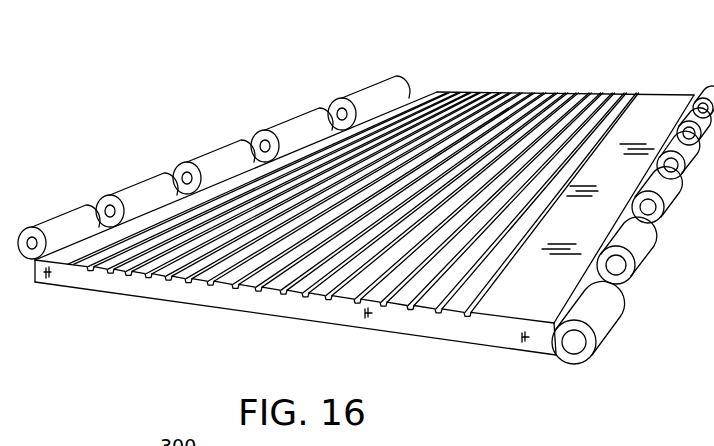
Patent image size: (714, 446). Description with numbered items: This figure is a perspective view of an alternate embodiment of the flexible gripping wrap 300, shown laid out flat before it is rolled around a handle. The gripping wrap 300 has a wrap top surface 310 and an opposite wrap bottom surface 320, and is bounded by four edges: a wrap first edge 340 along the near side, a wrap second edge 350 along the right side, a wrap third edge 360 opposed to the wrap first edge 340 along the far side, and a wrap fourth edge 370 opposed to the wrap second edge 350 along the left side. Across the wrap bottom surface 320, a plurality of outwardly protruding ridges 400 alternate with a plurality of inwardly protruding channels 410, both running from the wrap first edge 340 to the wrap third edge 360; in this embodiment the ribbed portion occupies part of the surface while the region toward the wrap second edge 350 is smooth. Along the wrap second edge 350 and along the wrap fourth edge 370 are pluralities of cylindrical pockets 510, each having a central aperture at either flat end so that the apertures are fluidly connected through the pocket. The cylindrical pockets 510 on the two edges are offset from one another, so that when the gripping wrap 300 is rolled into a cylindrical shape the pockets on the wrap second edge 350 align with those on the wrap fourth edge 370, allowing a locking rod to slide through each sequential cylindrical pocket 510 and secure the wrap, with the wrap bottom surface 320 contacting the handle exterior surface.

The gripping wrap 300 is at (167, 107).
The wrap top surface 310 is at (385, 330).
The wrap bottom surface 320 is at (652, 117).
The wrap first edge 340 is at (478, 341).
The wrap second edge 350 is at (672, 122).
The wrap third edge 360 is at (492, 95).
The wrap fourth edge 370 is at (333, 131).
The outwardly protruding ridges 400 is at (190, 278).
The inwardly protruding channels 410 is at (213, 283).
The cylindrical pockets 510 is at (132, 200).